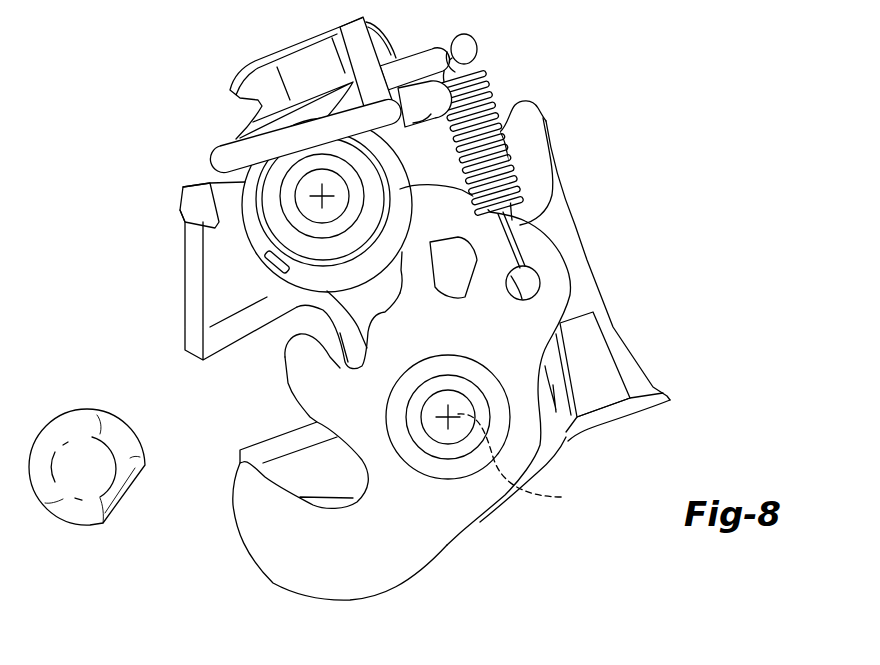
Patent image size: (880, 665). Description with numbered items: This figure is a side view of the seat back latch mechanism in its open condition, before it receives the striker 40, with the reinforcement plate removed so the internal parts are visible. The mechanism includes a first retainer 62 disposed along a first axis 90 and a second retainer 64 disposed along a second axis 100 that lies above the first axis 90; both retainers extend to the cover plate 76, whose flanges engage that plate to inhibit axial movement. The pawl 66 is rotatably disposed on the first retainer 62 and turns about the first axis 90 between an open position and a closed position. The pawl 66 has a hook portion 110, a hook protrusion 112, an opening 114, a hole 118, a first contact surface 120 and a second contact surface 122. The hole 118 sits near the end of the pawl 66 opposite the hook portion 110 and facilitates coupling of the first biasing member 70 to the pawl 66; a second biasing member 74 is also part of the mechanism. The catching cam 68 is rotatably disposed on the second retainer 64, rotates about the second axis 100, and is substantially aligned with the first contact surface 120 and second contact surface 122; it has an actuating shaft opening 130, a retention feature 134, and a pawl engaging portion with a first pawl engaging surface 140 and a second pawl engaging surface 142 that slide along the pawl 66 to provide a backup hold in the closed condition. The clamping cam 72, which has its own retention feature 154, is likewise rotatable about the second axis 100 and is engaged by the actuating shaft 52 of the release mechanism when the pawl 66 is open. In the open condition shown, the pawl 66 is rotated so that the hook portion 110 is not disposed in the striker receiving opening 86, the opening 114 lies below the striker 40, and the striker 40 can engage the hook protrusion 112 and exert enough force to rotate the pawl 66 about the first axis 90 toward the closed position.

The striker 40 is at (87, 410).
The actuating shaft 52 is at (306, 88).
The first retainer 62 is at (454, 468).
The second retainer 64 is at (277, 220).
The pawl 66 is at (403, 580).
The catching cam 68 is at (417, 57).
The first biasing member 70 is at (485, 84).
The clamping cam 72 is at (533, 148).
The second biasing member 74 is at (249, 186).
The cover plate 76 is at (657, 407).
The striker receiving opening 86 is at (238, 398).
The first axis 90 is at (522, 463).
The second axis 100 is at (312, 205).
The hook portion 110 is at (235, 487).
The hook protrusion 112 is at (284, 360).
The opening 114 is at (320, 483).
The hole 118 is at (540, 280).
The first contact surface 120 is at (383, 358).
The second contact surface 122 is at (396, 283).
The actuating shaft opening 130 is at (436, 115).
The retention feature 134 is at (478, 37).
The first pawl engaging surface 140 is at (435, 189).
The second pawl engaging surface 142 is at (503, 138).
The retention feature 154 is at (215, 226).